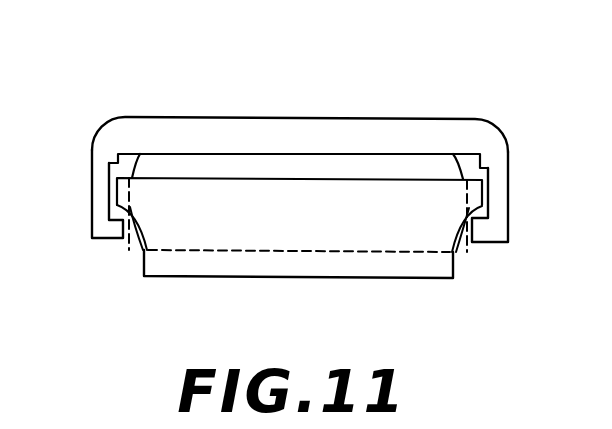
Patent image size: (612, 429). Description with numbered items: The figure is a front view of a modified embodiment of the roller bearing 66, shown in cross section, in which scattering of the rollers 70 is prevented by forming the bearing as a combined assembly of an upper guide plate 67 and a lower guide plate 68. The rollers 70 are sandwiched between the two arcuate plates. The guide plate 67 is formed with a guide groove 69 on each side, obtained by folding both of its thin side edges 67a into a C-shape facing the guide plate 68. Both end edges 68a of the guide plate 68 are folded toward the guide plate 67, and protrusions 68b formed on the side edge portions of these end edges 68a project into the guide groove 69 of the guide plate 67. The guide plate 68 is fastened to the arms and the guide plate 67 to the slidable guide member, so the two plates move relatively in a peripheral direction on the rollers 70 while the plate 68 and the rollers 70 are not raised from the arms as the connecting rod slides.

The roller bearing 66 is at (167, 102).
The guide plate 67 is at (220, 137).
The side edges 67a is at (101, 188).
The guide plate 68 is at (303, 260).
The end edges 68a is at (387, 200).
The protrusions 68b is at (117, 205).
The guide groove 69 is at (119, 153).
The rollers 70 is at (310, 170).